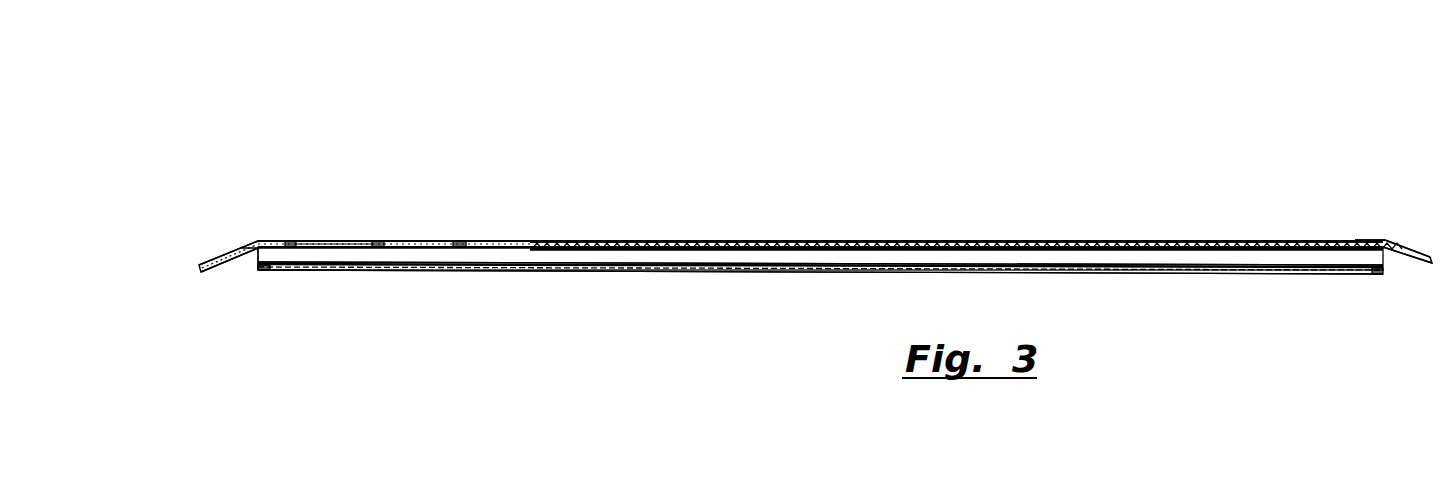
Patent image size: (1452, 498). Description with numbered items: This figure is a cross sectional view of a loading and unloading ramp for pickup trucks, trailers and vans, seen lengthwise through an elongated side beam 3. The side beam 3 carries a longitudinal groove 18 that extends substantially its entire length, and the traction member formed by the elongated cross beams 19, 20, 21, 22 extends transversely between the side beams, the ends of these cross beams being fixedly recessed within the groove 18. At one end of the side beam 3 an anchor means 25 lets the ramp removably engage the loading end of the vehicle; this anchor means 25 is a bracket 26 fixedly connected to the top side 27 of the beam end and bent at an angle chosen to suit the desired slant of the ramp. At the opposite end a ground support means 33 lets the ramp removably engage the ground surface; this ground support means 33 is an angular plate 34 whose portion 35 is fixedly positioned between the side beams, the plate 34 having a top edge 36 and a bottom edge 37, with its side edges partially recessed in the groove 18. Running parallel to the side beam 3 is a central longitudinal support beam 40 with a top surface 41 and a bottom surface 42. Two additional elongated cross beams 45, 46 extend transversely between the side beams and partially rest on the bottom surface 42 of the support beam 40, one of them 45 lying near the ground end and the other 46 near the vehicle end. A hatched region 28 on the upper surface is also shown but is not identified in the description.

The elongated side beam 3 is at (710, 266).
The longitudinal groove 18 is at (497, 241).
The elongated cross beam 19 is at (293, 243).
The elongated cross beam 20 is at (380, 243).
The elongated cross beam 21 is at (466, 242).
The elongated cross beam 22 is at (1377, 242).
The anchor means 25 is at (1392, 262).
The bracket 26 is at (1410, 252).
The top side 27 is at (1350, 242).
The coated region 28 is at (784, 242).
The ground support means 33 is at (250, 255).
The angular plate 34 is at (232, 252).
The portion of angular plate 35 is at (273, 240).
The top edge 36 is at (217, 260).
The bottom edge 37 is at (207, 275).
The central longitudinal support beam 40 is at (585, 257).
The top surface 41 is at (327, 242).
The bottom surface 42 is at (1243, 270).
The additional elongated cross beam 45 is at (262, 270).
The additional elongated cross beam 46 is at (1378, 280).